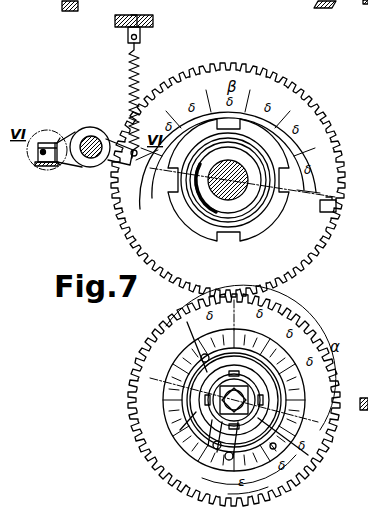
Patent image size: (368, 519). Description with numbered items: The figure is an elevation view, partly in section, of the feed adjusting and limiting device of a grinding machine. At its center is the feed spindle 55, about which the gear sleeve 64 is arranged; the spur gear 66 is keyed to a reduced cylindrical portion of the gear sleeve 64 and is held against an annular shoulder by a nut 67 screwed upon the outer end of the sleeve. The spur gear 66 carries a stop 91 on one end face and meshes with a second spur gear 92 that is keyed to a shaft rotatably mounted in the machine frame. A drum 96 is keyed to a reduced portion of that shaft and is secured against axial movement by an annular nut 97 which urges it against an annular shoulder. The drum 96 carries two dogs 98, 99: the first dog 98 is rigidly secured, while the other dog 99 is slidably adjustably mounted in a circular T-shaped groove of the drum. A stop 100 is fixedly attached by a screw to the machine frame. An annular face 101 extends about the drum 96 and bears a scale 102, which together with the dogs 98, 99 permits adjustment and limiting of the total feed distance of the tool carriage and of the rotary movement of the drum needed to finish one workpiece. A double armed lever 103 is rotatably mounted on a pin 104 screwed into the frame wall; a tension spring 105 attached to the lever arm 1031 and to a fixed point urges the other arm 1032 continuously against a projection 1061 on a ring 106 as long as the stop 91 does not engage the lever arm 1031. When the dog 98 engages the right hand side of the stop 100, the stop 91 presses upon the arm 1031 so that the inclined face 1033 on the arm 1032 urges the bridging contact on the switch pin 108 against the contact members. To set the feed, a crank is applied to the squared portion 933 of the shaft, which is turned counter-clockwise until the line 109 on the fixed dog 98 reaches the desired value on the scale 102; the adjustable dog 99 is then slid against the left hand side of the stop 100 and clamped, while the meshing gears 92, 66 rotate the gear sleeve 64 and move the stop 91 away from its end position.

The feed spindle 55 is at (210, 198).
The gear sleeve 64 is at (268, 186).
The spur gear 66 is at (332, 238).
The nut 67 is at (250, 228).
The stop 91 is at (336, 208).
The spur gear 92 is at (290, 308).
The drum 96 is at (198, 388).
The annular nut 97 is at (256, 384).
The dog 98 is at (212, 352).
The dog 99 is at (206, 444).
The stop 100 is at (228, 460).
The annular face 101 is at (180, 438).
The scale 102 is at (176, 412).
The double armed lever 103 is at (92, 165).
The pin 104 is at (131, 128).
The tension spring 105 is at (140, 62).
The ring 106 is at (57, 144).
The switch pin 108 is at (86, 134).
The line 109 is at (200, 358).
The squared portion 933 is at (308, 455).
The lever arm 1031 is at (134, 158).
The lever arm 1032 is at (54, 165).
The inclined face 1033 is at (46, 148).
The projection 1061 is at (40, 160).